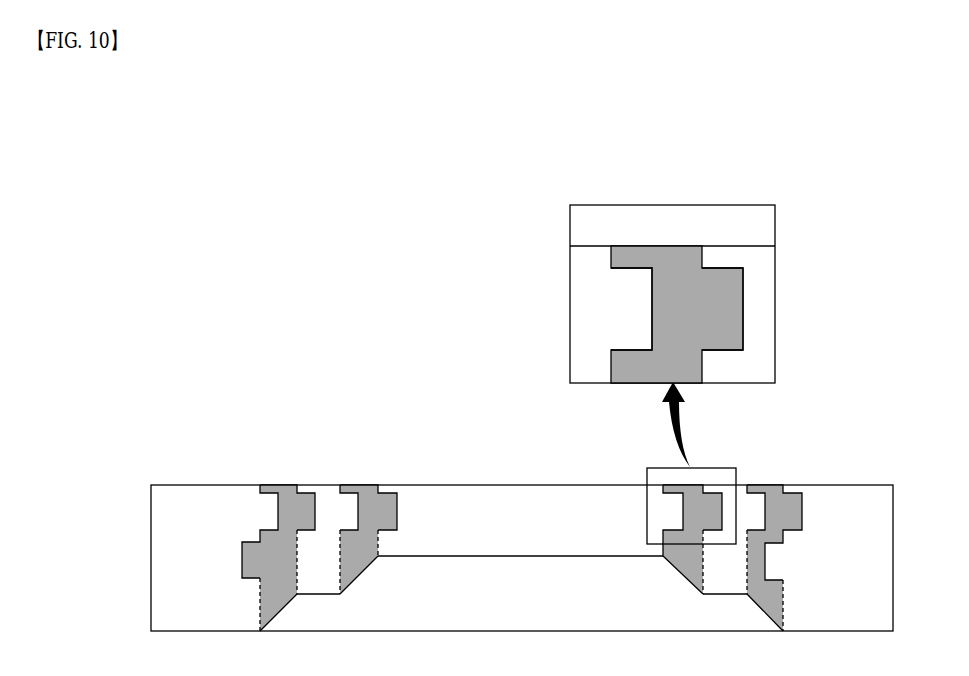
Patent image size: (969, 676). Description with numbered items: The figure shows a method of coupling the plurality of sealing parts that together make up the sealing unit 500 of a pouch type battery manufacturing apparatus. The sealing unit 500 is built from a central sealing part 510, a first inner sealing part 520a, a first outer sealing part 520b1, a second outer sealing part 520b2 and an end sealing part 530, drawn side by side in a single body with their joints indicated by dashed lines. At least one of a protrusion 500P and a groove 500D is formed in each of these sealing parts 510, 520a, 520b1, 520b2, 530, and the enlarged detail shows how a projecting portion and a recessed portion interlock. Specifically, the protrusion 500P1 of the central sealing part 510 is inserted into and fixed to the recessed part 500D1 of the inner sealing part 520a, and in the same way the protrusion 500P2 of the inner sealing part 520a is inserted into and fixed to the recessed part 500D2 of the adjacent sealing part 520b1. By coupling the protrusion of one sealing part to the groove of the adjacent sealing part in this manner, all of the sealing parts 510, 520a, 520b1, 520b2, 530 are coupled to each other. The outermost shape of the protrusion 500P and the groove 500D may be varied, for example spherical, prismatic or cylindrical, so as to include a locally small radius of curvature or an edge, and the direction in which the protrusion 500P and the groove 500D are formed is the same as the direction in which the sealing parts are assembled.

The sealing unit 500 is at (458, 418).
The central sealing part 510 is at (440, 508).
The 1-1 sealing part 520a is at (370, 508).
The 1-2-1 sealing part 520b1 is at (332, 508).
The 1-2-2 sealing part 520b2 is at (290, 508).
The outer sealing part 530 is at (214, 508).
The protrusion 500P is at (550, 252).
The protrusion of the central sealing part 500P1 is at (643, 307).
The protrusion of the 1-1 sealing part 500P2 is at (734, 307).
The groove 500D is at (330, 237).
The recessed part of the 1-1 sealing part 500D1 is at (369, 158).
The recessed part of the 1-2-1 sealing part 500D2 is at (369, 198).